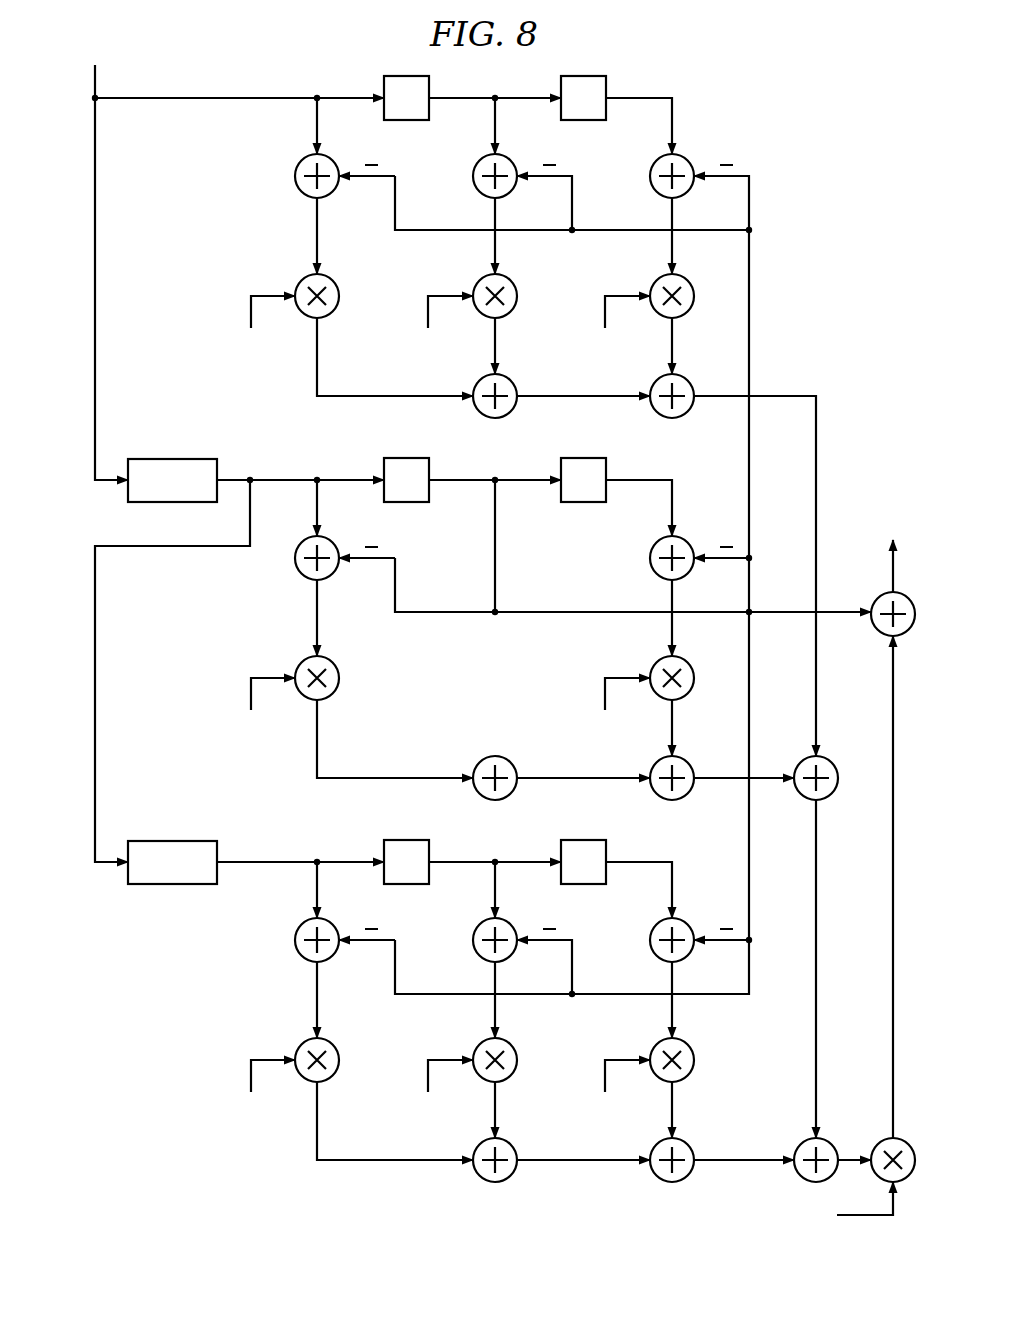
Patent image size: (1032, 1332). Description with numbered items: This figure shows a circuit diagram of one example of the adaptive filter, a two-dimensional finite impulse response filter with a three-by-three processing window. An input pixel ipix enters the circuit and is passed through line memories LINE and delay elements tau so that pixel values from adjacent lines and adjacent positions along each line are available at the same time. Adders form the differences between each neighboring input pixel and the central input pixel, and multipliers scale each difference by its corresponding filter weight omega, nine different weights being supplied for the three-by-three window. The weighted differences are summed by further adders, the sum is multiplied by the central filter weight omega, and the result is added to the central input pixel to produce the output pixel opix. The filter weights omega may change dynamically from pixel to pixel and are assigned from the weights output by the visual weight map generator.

The input pixel ipix is at (143, 446).
The delay element tau is at (495, 480).
The line memory LINE is at (172, 671).
The filter weight omega is at (544, 760).
The output pixel opix is at (900, 827).